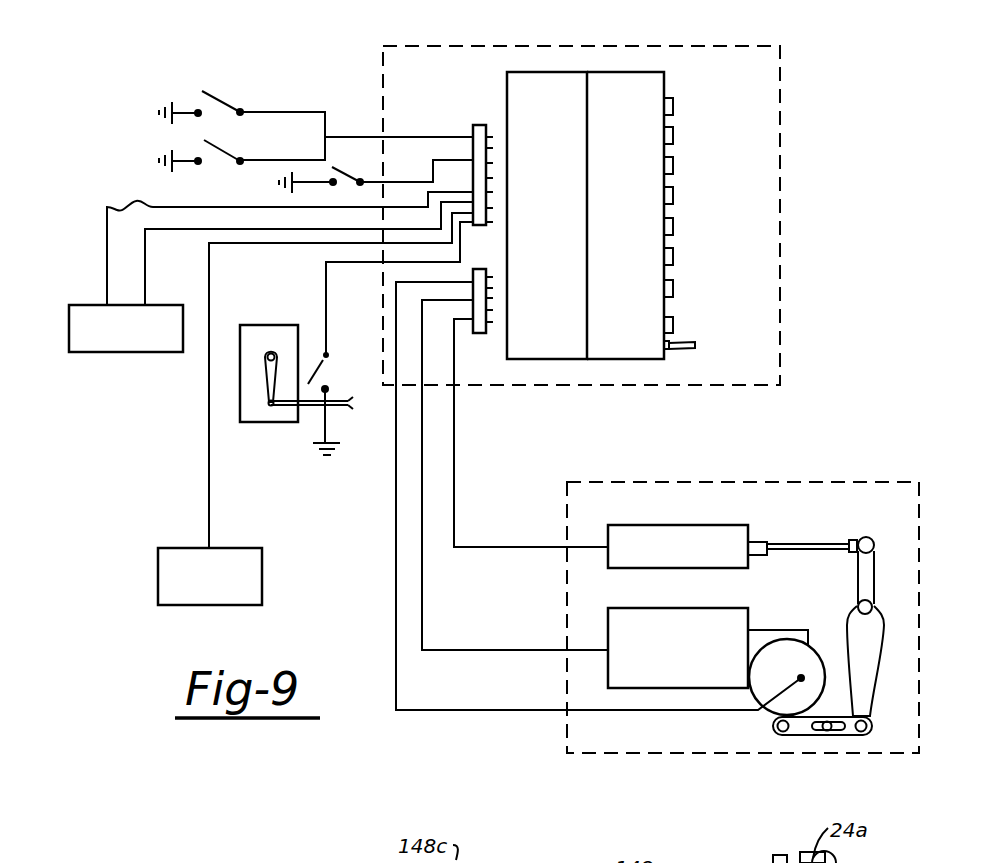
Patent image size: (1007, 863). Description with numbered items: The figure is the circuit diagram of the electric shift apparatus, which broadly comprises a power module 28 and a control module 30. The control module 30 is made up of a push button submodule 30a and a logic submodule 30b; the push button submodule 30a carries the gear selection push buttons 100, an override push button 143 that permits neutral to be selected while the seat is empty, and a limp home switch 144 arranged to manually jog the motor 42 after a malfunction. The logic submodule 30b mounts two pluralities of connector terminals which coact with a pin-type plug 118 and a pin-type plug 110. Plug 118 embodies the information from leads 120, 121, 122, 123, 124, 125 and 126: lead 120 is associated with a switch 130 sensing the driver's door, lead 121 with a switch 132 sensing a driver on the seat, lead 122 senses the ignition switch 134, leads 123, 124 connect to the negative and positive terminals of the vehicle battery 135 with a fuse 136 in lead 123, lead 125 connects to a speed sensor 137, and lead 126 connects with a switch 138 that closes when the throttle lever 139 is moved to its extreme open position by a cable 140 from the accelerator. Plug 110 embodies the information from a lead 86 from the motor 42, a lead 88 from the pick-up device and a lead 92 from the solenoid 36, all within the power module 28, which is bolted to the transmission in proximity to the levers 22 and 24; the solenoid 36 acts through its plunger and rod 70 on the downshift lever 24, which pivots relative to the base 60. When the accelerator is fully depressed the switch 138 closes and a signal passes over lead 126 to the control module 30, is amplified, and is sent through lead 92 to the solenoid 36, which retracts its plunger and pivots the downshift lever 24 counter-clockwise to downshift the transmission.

The control module 30 is at (590, 46).
The push button submodule 30a is at (636, 160).
The logic submodule 30b is at (560, 160).
The push buttons 100 is at (673, 107).
The override push button 143 is at (673, 326).
The limp home switch 144 is at (695, 345).
The pin-type plug 118 is at (479, 125).
The pin-type plug 110 is at (479, 269).
The lead 120 is at (302, 112).
The lead 121 is at (273, 160).
The switch 130 is at (190, 98).
The switch 132 is at (221, 165).
The fuse 136 is at (114, 159).
The ignition switch 134 is at (346, 184).
The lead 122 is at (405, 182).
The lead 123 is at (107, 240).
The lead 124 is at (145, 258).
The lead 125 is at (208, 472).
The lead 126 is at (326, 288).
The vehicle battery 135 is at (128, 352).
The speed sensor 137 is at (158, 590).
The switch 138 is at (334, 371).
The throttle lever 139 is at (268, 380).
The cable 140 is at (338, 404).
The lead 88 is at (396, 636).
The lead 86 is at (497, 650).
The lead 92 is at (454, 452).
The power module 28 is at (748, 503).
The solenoid 36 is at (697, 525).
The actuator rod 70 is at (832, 515).
The motor 42 is at (688, 650).
The downshift lever 24 is at (878, 575).
The lever 22 is at (880, 667).
The slide base 60 is at (827, 748).